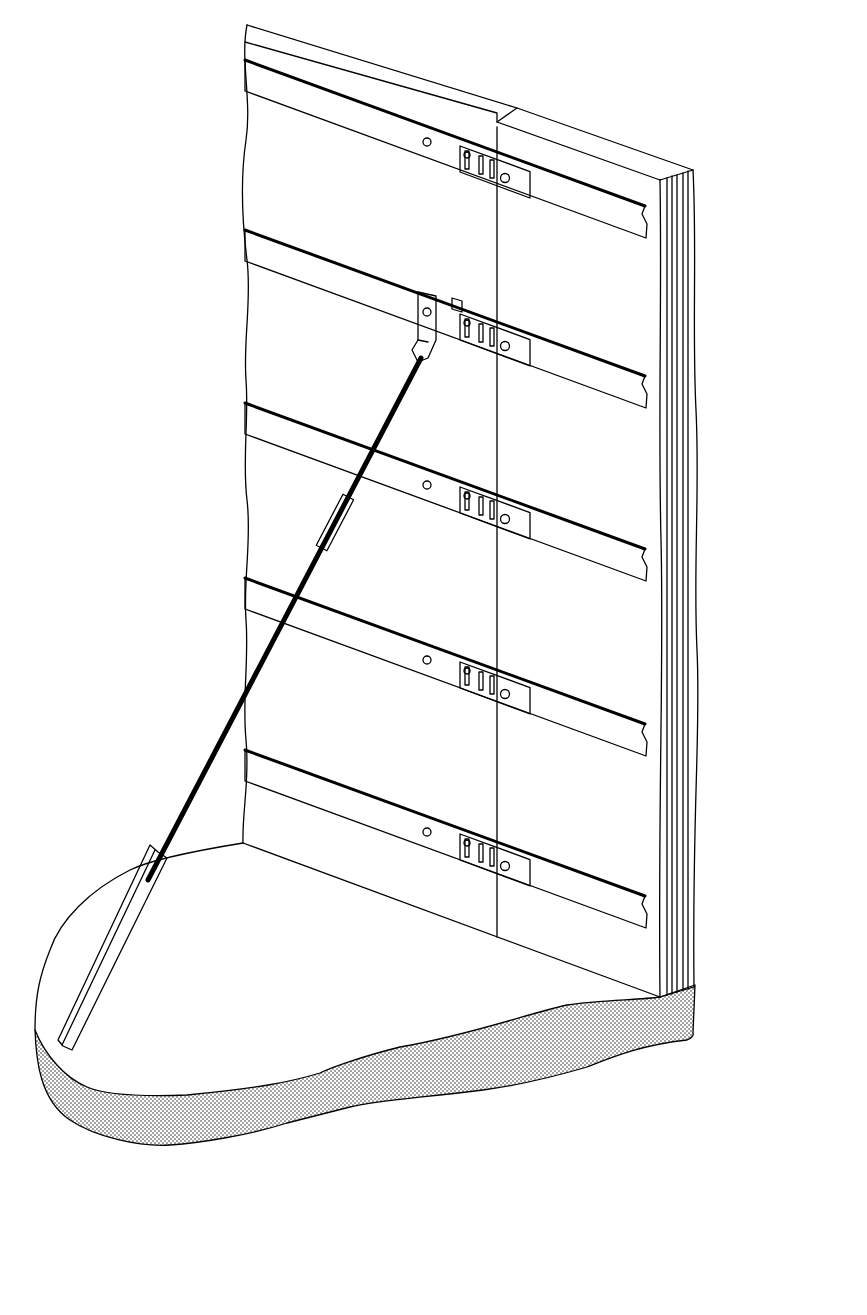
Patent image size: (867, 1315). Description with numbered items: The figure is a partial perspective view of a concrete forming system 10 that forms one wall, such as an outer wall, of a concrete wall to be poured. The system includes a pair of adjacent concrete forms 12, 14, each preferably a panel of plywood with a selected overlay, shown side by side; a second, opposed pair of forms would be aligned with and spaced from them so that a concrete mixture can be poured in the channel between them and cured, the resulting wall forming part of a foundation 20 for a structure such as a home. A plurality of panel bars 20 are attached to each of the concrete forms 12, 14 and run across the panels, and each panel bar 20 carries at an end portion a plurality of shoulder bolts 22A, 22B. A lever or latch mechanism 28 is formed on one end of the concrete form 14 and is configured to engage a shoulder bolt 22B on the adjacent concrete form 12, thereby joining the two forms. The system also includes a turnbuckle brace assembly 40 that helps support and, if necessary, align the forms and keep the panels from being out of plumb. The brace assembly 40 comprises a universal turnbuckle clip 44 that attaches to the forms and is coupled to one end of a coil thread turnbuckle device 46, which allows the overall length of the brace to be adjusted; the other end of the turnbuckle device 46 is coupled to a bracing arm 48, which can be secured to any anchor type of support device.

The concrete forming system 10 is at (610, 100).
The concrete form 12 is at (270, 157).
The concrete form 14 is at (702, 266).
The panel bar 20 is at (372, 128).
The shoulder bolt 22A is at (423, 318).
The shoulder bolt 22B is at (458, 300).
The latch mechanism 28 is at (503, 188).
The turnbuckle brace assembly 40 is at (172, 905).
The universal turnbuckle clip 44 is at (440, 356).
The coil thread turnbuckle device 46 is at (345, 520).
The bracing arm 48 is at (108, 992).